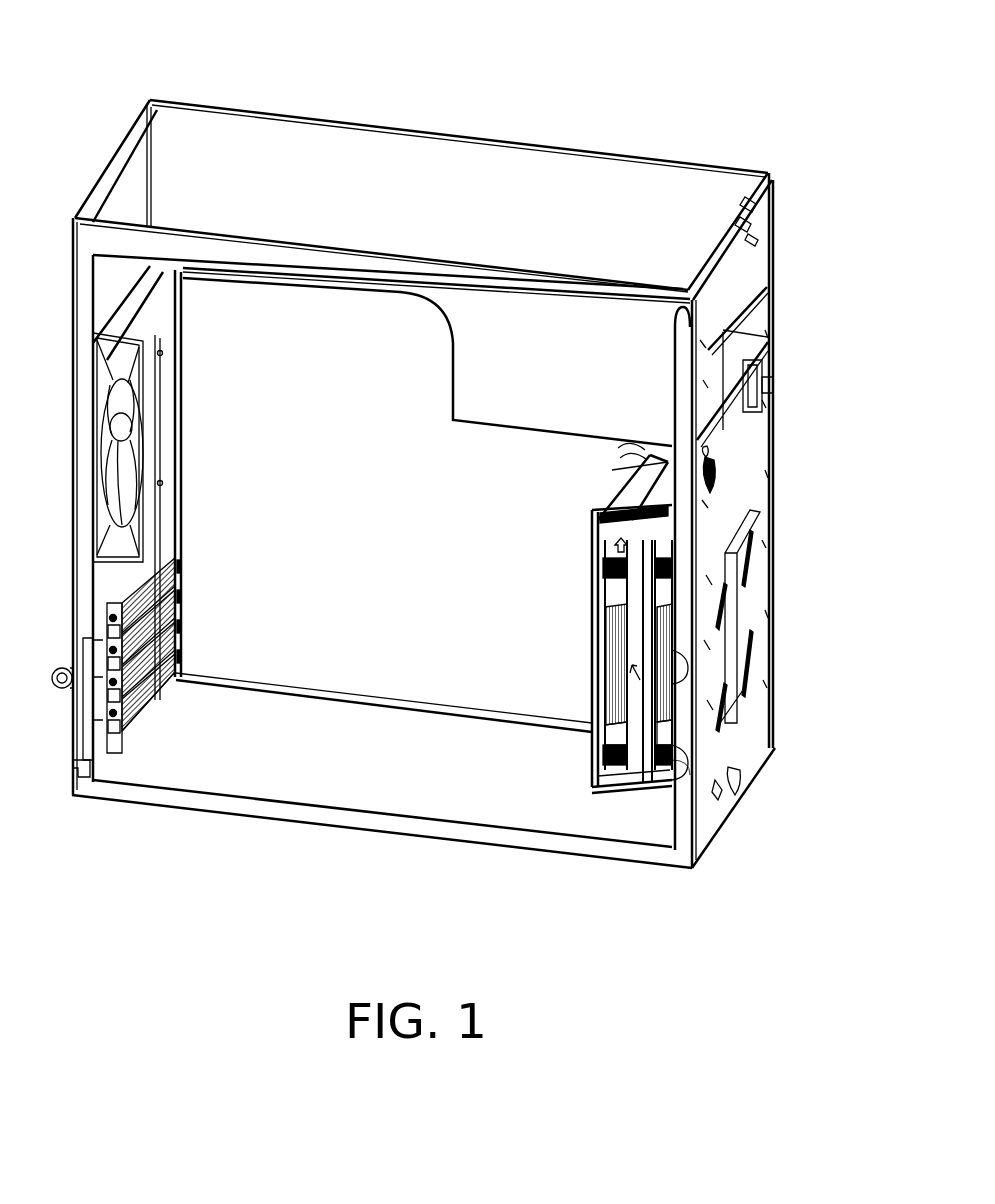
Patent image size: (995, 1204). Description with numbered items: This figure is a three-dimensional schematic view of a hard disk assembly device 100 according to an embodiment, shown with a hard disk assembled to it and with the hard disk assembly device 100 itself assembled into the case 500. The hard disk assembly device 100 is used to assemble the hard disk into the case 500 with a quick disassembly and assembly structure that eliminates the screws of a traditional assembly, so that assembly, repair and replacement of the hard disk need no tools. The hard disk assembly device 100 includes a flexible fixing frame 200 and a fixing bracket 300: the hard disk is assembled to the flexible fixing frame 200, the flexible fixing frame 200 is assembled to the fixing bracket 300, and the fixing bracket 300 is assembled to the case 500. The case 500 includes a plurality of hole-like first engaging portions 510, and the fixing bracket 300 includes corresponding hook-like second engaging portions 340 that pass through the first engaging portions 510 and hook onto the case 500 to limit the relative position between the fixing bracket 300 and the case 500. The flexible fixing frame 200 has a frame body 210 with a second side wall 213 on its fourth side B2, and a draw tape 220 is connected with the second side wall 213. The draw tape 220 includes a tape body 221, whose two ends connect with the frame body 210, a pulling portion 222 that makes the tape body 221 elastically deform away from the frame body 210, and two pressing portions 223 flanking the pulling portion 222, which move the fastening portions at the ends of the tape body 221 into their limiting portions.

The hard disk assembly device 100 is at (574, 802).
The flexible fixing frame 200 is at (503, 711).
The frame body 210 is at (513, 660).
The second side wall 213 is at (605, 592).
The draw tape 220 is at (503, 653).
The tape body 221 is at (617, 735).
The pulling portion 222 is at (607, 672).
The pressing portion 223 is at (590, 563).
The fixing bracket 300 is at (603, 505).
The second engaging portion 340 is at (733, 730).
The case 500 is at (268, 150).
The first engaging portion 510 is at (753, 692).
The fourth side B2 is at (684, 762).